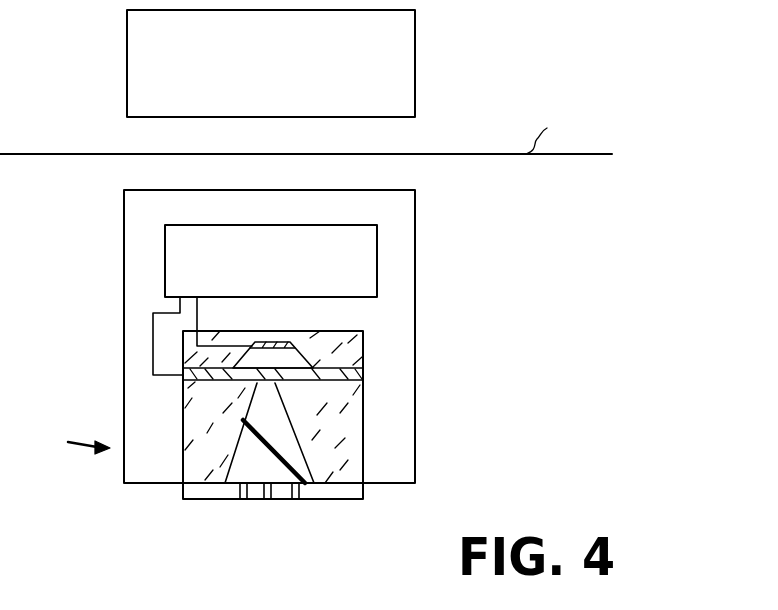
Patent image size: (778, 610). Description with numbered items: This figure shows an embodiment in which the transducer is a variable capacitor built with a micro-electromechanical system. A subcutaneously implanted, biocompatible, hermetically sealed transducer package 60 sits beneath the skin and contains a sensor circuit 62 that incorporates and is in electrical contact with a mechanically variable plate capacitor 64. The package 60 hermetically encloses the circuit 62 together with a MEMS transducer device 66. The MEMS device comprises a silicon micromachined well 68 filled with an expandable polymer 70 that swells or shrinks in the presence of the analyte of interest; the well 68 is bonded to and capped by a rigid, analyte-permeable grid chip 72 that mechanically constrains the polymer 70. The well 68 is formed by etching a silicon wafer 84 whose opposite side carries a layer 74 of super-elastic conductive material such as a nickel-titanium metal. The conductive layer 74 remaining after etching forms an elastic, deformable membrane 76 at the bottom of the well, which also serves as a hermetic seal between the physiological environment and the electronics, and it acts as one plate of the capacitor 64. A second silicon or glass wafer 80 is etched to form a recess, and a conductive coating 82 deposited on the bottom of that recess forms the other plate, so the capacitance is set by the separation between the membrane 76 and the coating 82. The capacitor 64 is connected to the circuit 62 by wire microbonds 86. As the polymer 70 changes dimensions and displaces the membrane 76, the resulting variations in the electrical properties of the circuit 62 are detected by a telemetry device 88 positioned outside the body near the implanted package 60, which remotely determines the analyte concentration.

The transducer package 60 is at (125, 237).
The sensor circuit 62 is at (377, 255).
The mechanically variable plate capacitor 64 is at (440, 361).
The MEMS transducer device 66 is at (64, 447).
The silicon micromachined well 68 is at (313, 457).
The expandable polymer 70 is at (257, 460).
The analyte-permeable grid chip 72 is at (317, 500).
The layer of super-elastic conductive material 74 is at (183, 378).
The deformable membrane 76 is at (273, 383).
The second silicon or glass wafer 80 is at (183, 348).
The conductive coating 82 is at (275, 333).
The silicon wafer 84 is at (197, 463).
The wire microbonds 86 is at (197, 314).
The telemetry device 88 is at (415, 77).